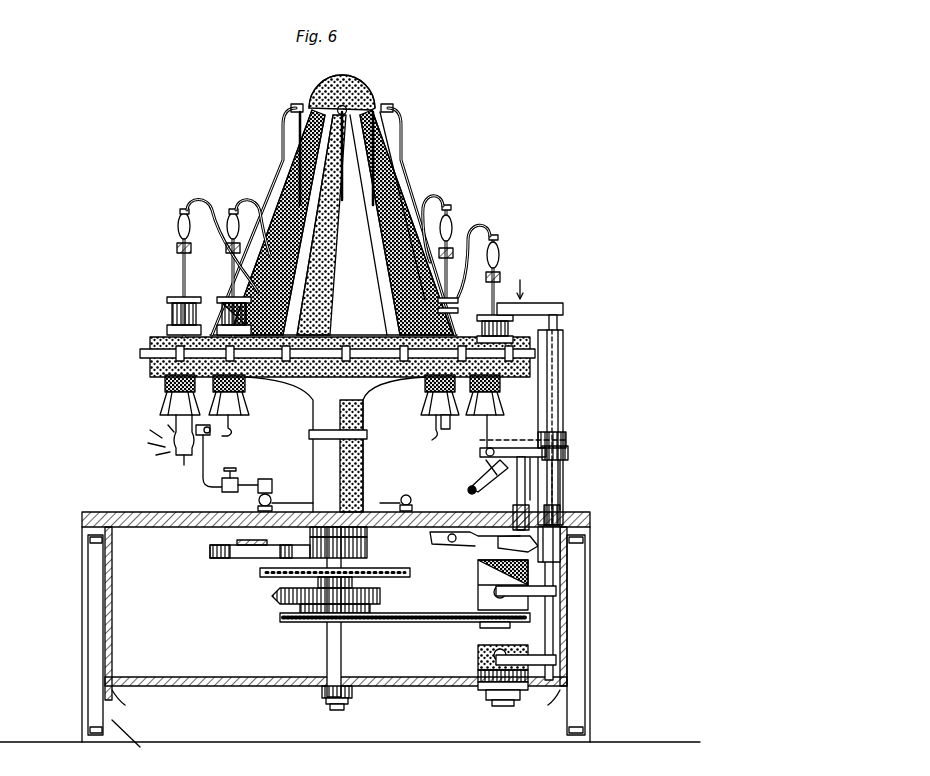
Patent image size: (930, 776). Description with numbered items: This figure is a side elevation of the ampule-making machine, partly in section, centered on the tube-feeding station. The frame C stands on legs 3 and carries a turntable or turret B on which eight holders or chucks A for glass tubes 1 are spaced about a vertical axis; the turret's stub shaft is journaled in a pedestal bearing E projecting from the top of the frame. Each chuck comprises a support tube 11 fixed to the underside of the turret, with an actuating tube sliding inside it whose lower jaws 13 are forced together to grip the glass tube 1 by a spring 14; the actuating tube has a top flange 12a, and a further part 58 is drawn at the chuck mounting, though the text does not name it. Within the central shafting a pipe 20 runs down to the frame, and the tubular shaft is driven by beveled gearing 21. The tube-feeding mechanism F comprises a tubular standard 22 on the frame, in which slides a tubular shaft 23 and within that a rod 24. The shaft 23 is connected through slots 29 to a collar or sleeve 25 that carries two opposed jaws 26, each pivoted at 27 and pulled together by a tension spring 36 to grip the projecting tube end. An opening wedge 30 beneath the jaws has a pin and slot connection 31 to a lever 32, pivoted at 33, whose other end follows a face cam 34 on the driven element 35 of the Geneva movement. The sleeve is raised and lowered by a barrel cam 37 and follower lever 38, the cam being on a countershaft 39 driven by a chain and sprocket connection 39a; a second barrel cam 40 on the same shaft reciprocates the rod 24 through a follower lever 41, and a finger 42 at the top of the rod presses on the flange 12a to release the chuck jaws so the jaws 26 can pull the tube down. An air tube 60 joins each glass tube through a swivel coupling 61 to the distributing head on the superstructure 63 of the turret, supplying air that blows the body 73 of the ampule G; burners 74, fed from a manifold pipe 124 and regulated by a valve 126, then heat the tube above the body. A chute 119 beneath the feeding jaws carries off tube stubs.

The glass tube 1 is at (178, 290).
The legs 3 is at (85, 598).
The support tube 11 is at (461, 402).
The top flange 12a is at (447, 292).
The jaws 13 is at (230, 433).
The spring 14 is at (172, 310).
The pipe 20 is at (326, 654).
The beveled gearing 21 is at (272, 600).
The tubular standard 22 is at (565, 390).
The tubular shaft 23 is at (562, 568).
The rod 24 is at (555, 620).
The collar or sleeve 25 is at (572, 452).
The jaws 26 is at (562, 478).
The pivot 27 is at (536, 470).
The slots 29 is at (568, 436).
The opening wedge 30 is at (562, 494).
The pin and slot connection 31 is at (508, 520).
The lever 32 is at (480, 522).
The pivot 33 is at (456, 520).
The face cam 34 is at (432, 587).
The driven element 35 is at (245, 560).
The tension spring 36 is at (486, 441).
The barrel cam 37 is at (478, 598).
The follower lever 38 is at (556, 595).
The countershaft 39 is at (482, 628).
The chain and sprocket connection 39a is at (402, 622).
The second barrel cam 40 is at (478, 660).
The follower lever 41 is at (535, 666).
The finger 42 is at (536, 306).
The flange cap 58 is at (168, 327).
The air tube 60 is at (295, 140).
The swivel coupling 61 is at (176, 250).
The superstructure 63 is at (410, 185).
The body 73 is at (184, 462).
The burners 74 is at (212, 435).
The chute 119 is at (470, 482).
The manifold pipe 124 is at (406, 495).
The valve 126 is at (226, 494).
The holders or chucks A is at (165, 398).
The turntable or turret B is at (148, 338).
The frame C is at (135, 510).
The pedestal bearing E is at (320, 468).
The tube-feeding mechanism F is at (482, 460).
The ampule G is at (170, 456).